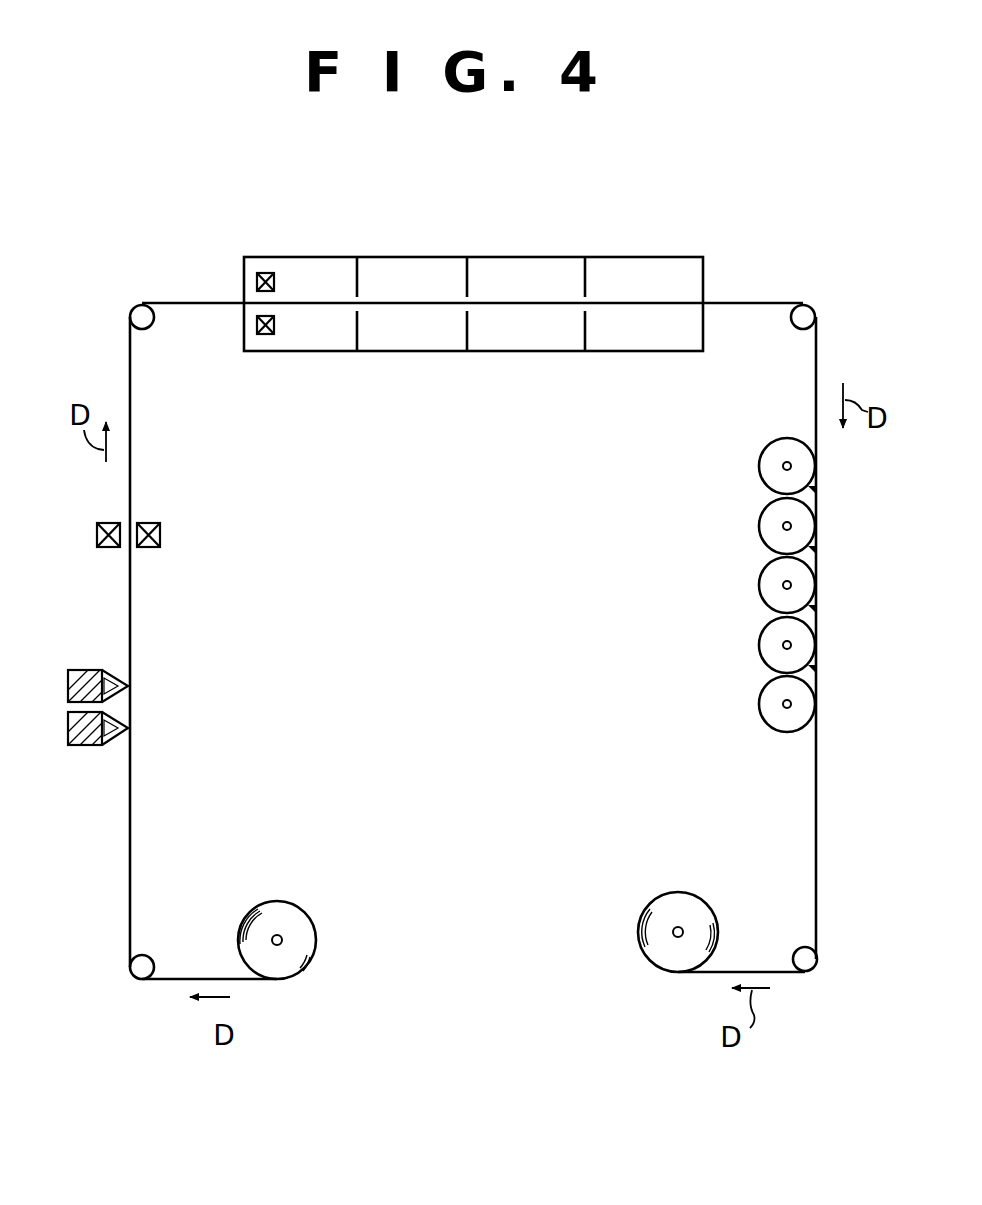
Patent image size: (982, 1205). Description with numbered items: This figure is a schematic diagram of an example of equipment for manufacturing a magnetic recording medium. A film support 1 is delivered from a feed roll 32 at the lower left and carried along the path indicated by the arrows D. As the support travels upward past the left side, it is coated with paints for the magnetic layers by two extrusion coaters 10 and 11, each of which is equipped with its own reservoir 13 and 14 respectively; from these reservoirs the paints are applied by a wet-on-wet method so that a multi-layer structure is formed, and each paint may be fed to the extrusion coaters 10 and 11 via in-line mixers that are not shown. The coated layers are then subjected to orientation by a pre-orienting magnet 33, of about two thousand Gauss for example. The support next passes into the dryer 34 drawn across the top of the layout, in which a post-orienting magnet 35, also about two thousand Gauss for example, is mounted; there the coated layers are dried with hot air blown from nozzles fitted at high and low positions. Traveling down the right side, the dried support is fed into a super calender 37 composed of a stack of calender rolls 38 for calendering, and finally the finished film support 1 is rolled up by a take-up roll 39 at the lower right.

The film support 1 is at (130, 822).
The extrusion coater 10 is at (68, 727).
The extrusion coater 11 is at (68, 682).
The reservoir 13 is at (108, 748).
The reservoir 14 is at (103, 678).
The feed roll 32 is at (288, 932).
The pre-orienting magnet 33 is at (162, 535).
The dryer 34 is at (430, 362).
The post-orienting magnet 35 is at (270, 336).
The super calender 37 is at (741, 585).
The calender rolls 38 is at (767, 463).
The take-up roll 39 is at (660, 908).